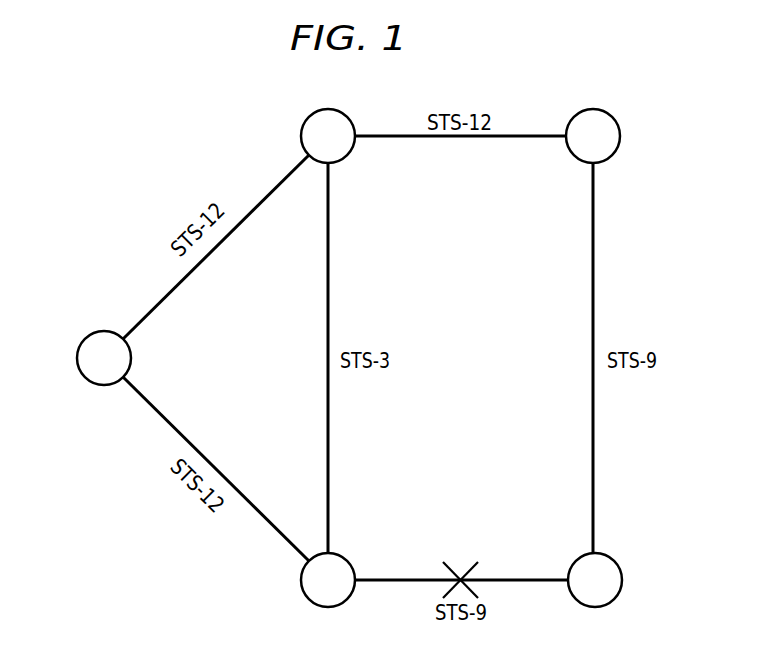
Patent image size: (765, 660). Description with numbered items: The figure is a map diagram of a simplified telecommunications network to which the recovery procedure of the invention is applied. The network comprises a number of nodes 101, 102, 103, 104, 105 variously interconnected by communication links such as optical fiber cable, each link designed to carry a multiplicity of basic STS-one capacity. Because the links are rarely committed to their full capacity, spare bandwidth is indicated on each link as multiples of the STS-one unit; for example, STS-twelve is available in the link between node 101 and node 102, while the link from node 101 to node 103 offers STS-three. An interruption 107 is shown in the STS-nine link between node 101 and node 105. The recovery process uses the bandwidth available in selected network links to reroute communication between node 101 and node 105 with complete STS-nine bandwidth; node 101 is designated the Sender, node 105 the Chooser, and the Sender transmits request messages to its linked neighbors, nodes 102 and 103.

The node 101 is at (301, 582).
The node 102 is at (92, 334).
The node 103 is at (301, 139).
The node 104 is at (620, 140).
The node 105 is at (622, 583).
The interruption 107 is at (464, 572).